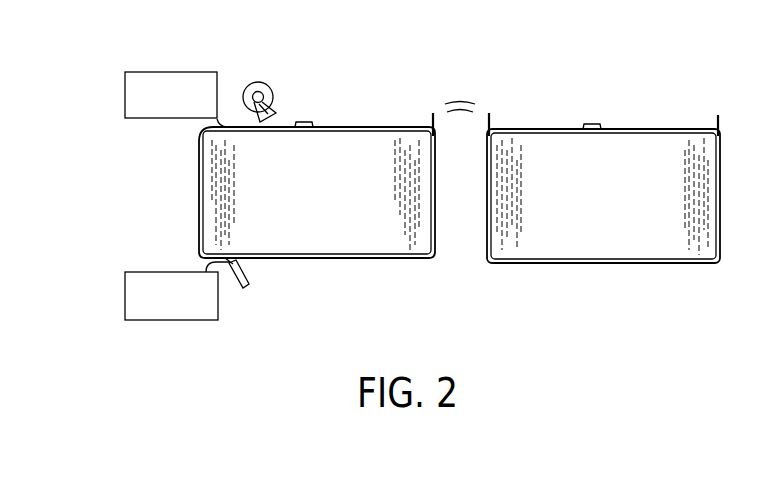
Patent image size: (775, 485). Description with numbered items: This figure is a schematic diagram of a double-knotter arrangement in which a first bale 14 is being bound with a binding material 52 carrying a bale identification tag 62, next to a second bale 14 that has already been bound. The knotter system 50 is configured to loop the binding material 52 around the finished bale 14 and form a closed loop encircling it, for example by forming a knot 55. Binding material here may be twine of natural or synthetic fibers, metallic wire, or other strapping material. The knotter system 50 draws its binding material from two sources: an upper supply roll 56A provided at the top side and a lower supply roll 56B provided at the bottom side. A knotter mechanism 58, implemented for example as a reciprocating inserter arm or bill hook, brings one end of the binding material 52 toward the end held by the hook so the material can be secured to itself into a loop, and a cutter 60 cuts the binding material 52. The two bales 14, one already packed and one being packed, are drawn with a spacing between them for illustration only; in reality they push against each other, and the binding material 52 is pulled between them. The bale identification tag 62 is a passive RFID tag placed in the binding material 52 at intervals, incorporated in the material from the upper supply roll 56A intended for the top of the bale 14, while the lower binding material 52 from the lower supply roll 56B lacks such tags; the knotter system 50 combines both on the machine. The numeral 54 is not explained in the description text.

The bale 14 is at (652, 248).
The knotter system 50 is at (256, 54).
The binding material 52 is at (325, 259).
The container wall rim 54 is at (390, 243).
The knot 55 is at (428, 126).
The upper supply roll 56A is at (175, 72).
The lower supply roll 56B is at (173, 272).
The knotter mechanism 58 is at (253, 277).
The cutter 60 is at (262, 82).
The bale identification tag 62 is at (313, 122).